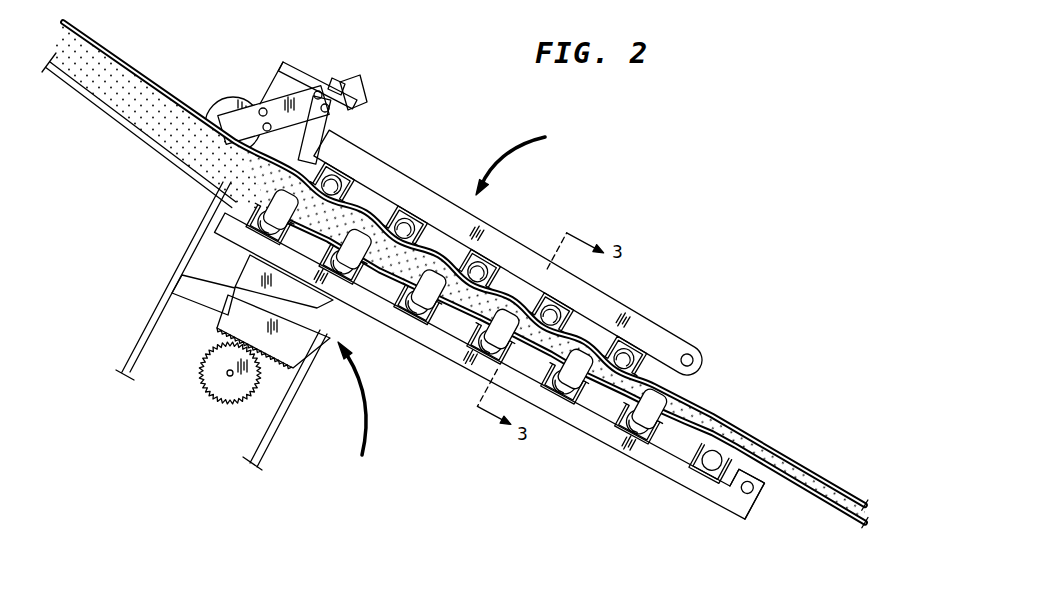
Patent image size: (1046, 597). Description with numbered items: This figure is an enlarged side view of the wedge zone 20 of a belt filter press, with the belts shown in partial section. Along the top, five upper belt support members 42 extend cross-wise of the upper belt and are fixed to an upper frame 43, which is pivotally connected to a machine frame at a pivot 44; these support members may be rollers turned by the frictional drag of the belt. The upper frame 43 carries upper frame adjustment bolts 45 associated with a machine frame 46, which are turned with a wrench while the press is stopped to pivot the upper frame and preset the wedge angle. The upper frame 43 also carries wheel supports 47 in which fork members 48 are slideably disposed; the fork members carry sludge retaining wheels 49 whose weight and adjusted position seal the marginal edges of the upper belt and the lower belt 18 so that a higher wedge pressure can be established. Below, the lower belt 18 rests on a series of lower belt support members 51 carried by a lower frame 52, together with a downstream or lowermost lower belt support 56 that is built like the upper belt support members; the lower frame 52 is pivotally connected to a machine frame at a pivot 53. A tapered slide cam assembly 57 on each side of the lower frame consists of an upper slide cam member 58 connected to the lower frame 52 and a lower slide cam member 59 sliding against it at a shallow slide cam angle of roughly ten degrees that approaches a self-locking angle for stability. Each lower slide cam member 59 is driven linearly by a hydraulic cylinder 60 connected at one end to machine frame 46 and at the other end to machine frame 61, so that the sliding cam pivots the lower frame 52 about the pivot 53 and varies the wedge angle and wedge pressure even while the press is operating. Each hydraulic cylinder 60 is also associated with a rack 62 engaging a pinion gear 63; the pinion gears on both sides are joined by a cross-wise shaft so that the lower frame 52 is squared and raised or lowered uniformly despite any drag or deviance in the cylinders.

The lower belt 18 is at (133, 122).
The wedge zone 20 is at (510, 156).
The upper belt support members 42 is at (408, 225).
The upper frame 43 is at (492, 246).
The pivot 44 is at (692, 360).
The upper frame adjustment bolts 45 is at (337, 127).
The machine frame 46 is at (297, 60).
The wheel supports 47 is at (332, 78).
The fork members 48 is at (363, 87).
The sludge retaining wheels 49 is at (224, 96).
The lower belt support members 51 is at (352, 243).
The lower frame 52 is at (567, 414).
The pivot 53 is at (755, 488).
The lowermost lower belt support 56 is at (708, 467).
The tapered slide cam assembly 57 is at (355, 412).
The upper slide cam member 58 is at (250, 277).
The lower slide cam member 59 is at (307, 325).
The hydraulic cylinder 60 is at (228, 318).
The machine frame 61 is at (272, 437).
The rack 62 is at (222, 331).
The pinion gear 63 is at (225, 397).